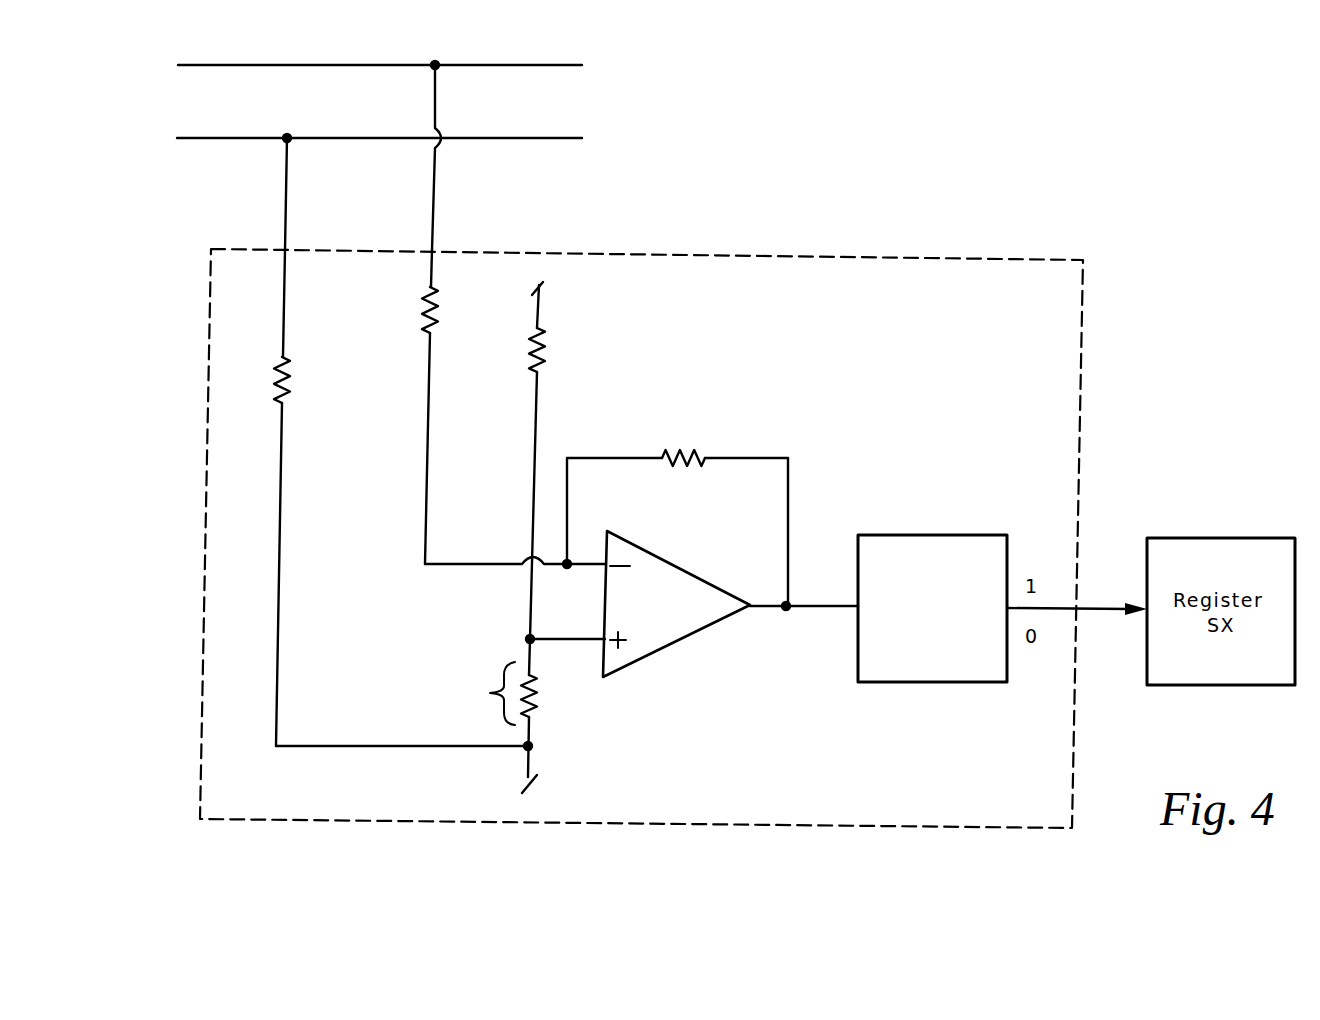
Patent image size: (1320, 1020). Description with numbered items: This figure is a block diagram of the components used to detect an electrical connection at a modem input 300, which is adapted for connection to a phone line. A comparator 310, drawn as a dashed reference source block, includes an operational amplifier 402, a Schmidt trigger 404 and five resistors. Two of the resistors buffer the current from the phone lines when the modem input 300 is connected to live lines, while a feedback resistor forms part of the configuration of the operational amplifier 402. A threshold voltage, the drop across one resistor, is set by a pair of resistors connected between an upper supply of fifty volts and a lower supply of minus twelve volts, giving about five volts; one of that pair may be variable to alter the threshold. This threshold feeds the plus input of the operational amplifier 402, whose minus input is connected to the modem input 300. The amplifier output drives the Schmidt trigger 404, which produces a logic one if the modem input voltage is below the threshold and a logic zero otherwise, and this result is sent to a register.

The modem input 300 is at (280, 218).
The comparator 310 is at (989, 333).
The operational amplifier 402 is at (707, 618).
The Schmidt trigger 404 is at (959, 655).